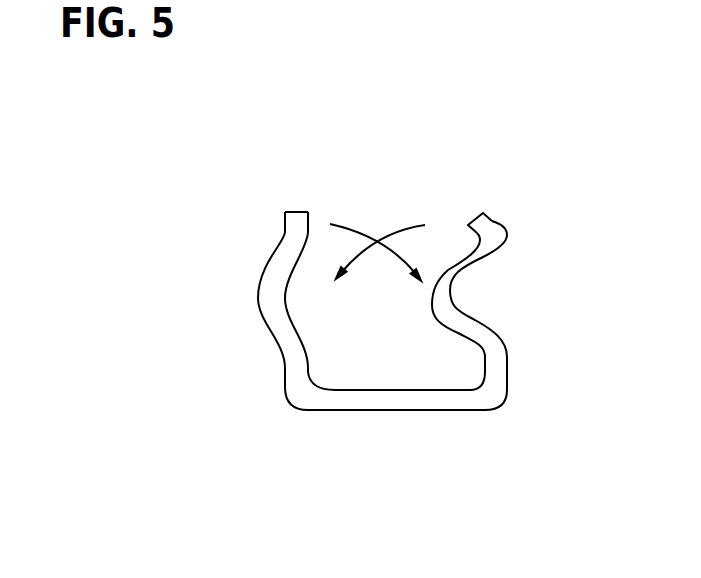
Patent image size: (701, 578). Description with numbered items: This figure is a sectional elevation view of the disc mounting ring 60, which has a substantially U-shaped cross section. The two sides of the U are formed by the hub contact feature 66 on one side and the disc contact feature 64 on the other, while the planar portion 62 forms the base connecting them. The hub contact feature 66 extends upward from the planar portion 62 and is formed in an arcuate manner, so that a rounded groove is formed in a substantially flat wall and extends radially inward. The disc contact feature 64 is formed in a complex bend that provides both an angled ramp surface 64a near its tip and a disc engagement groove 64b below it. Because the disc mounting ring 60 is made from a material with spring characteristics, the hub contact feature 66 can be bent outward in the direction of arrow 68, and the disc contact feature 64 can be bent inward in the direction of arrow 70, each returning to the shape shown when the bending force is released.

The disc mounting ring 60 is at (250, 182).
The planar portion 62 is at (396, 395).
The disc contact feature 64 is at (508, 247).
The angled ramp surface 64a is at (490, 222).
The disc engagement groove 64b is at (462, 300).
The hub contact feature 66 is at (290, 222).
The arrow 68 is at (340, 227).
The arrow 70 is at (412, 228).